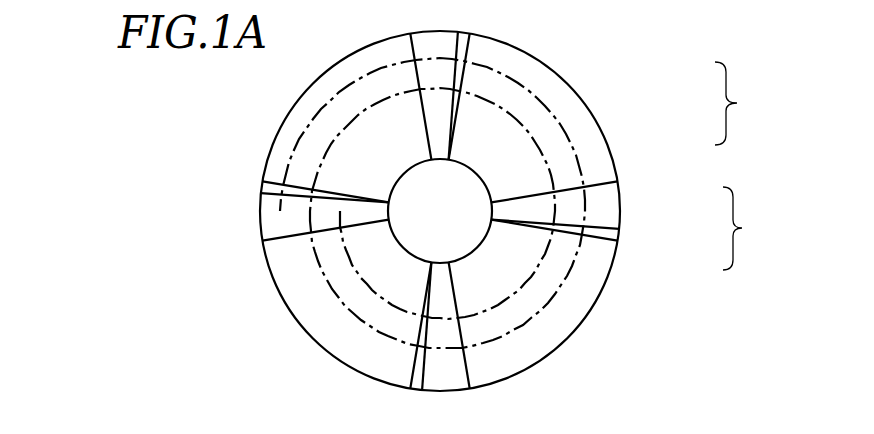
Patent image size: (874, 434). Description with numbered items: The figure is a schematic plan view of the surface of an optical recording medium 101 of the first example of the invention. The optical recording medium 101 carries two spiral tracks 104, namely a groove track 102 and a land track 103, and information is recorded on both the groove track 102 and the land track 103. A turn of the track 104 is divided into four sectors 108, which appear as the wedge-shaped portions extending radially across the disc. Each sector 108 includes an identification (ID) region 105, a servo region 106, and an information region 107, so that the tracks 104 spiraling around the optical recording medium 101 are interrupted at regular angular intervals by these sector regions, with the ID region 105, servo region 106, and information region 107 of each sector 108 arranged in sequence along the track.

The optical recording medium 101 is at (552, 63).
The groove track 102 is at (545, 92).
The land track 103 is at (558, 148).
The spiral tracks 104 is at (755, 103).
The identification (ID) region 105 is at (612, 198).
The servo region 106 is at (612, 232).
The information region 107 is at (600, 262).
The sector 108 is at (758, 228).